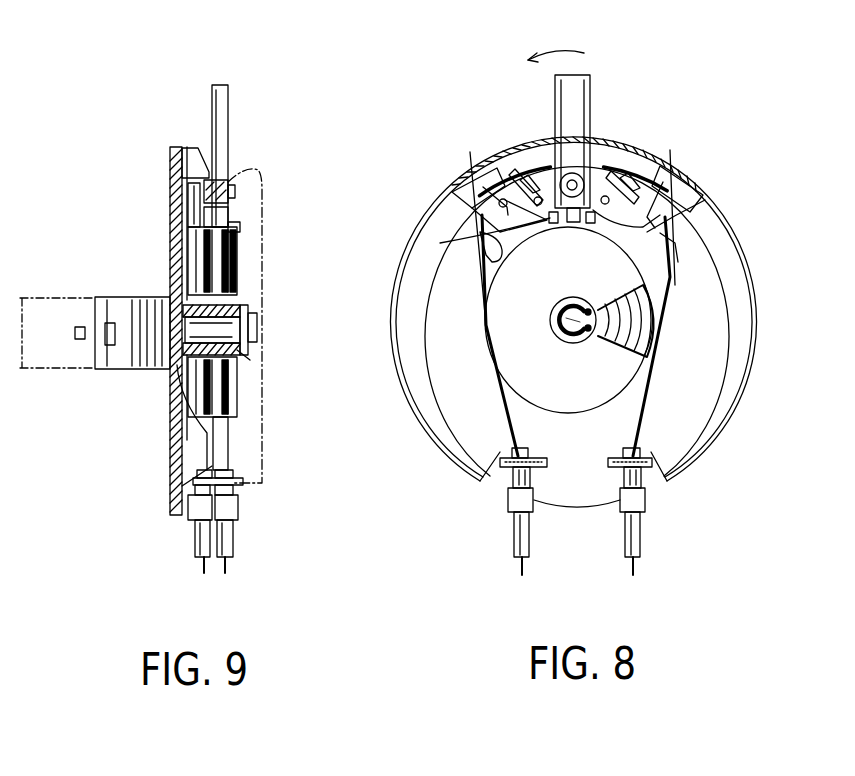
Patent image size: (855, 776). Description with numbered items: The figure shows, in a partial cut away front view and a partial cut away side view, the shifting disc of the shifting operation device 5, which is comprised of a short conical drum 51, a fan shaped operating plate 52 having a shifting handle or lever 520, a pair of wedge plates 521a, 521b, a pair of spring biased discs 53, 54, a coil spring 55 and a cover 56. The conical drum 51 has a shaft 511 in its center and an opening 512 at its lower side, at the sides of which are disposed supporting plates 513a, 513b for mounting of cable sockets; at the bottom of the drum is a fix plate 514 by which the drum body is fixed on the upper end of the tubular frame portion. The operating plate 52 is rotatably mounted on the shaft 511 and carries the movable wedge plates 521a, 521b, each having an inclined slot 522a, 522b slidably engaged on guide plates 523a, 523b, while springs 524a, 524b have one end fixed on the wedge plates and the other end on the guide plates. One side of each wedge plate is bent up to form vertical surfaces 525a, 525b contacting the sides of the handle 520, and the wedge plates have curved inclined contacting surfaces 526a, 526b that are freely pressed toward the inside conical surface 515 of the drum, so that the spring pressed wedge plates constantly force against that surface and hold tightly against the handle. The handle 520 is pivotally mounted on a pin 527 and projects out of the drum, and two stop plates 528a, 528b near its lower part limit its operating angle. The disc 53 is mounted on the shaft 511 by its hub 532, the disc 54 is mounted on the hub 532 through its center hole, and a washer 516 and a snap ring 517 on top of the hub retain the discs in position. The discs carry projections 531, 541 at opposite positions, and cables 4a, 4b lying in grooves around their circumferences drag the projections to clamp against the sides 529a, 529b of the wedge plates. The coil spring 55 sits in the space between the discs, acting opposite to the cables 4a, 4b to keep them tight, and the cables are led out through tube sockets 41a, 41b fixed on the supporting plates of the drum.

In FIG. 8, the cable 4a is at (636, 572).
In FIG. 9, the cable 4a is at (203, 566).
In FIG. 8, the cable 4b is at (520, 570).
In FIG. 9, the cable 4b is at (228, 567).
In FIG. 8, the shifting operation device 5 is at (684, 88).
In FIG. 9, the shifting operation device 5 is at (194, 68).
In FIG. 8, the tube socket 41a is at (640, 528).
In FIG. 9, the tube socket 41a is at (200, 540).
In FIG. 8, the tube socket 41b is at (519, 538).
In FIG. 9, the tube socket 41b is at (230, 539).
In FIG. 8, the conical drum 51 is at (750, 242).
In FIG. 9, the conical drum 51 is at (170, 160).
In FIG. 8, the operating plate 52 is at (680, 262).
In FIG. 9, the operating plate 52 is at (182, 216).
In FIG. 8, the spring biased disc 53 is at (662, 302).
In FIG. 9, the spring biased disc 53 is at (185, 266).
In FIG. 8, the spring biased disc 54 is at (535, 373).
In FIG. 9, the spring biased disc 54 is at (238, 252).
In FIG. 8, the coil spring 55 is at (655, 342).
In FIG. 9, the cover 56 is at (265, 445).
In FIG. 8, the shaft 511 is at (582, 306).
In FIG. 9, the shaft 511 is at (258, 328).
In FIG. 8, the opening 512 is at (570, 502).
In FIG. 8, the supporting plate 513a is at (655, 470).
In FIG. 8, the supporting plate 513b is at (507, 470).
In FIG. 9, the fix plate 514 is at (130, 357).
In FIG. 8, the inside conical surface 515 is at (420, 262).
In FIG. 8, the washer 516 is at (561, 313).
In FIG. 9, the washer 516 is at (248, 305).
In FIG. 8, the snap ring 517 is at (564, 328).
In FIG. 9, the snap ring 517 is at (252, 316).
In FIG. 8, the shifting handle 520 is at (586, 90).
In FIG. 9, the shifting handle 520 is at (222, 102).
In FIG. 8, the wedge plate 521a is at (500, 175).
In FIG. 9, the wedge plate 521a is at (182, 187).
In FIG. 8, the wedge plate 521b is at (665, 175).
In FIG. 8, the inclined slot 522a is at (512, 180).
In FIG. 8, the inclined slot 522b is at (660, 182).
In FIG. 8, the guide plate 523a is at (515, 185).
In FIG. 8, the guide plate 523b is at (645, 160).
In FIG. 8, the spring 524a is at (464, 224).
In FIG. 8, the spring 524b is at (690, 218).
In FIG. 8, the vertical surface 525a is at (540, 196).
In FIG. 8, the vertical surface 525b is at (608, 196).
In FIG. 8, the curved inclined contacting surface 526a is at (530, 185).
In FIG. 9, the curved inclined contacting surface 526a is at (195, 152).
In FIG. 8, the curved inclined contacting surface 526b is at (632, 175).
In FIG. 8, the pin 527 is at (565, 175).
In FIG. 9, the pin 527 is at (236, 190).
In FIG. 8, the stop plate 528a is at (555, 224).
In FIG. 8, the stop plate 528b is at (592, 224).
In FIG. 8, the side of wedge plate 529a is at (458, 200).
In FIG. 8, the side of wedge plate 529b is at (700, 195).
In FIG. 8, the projection 531 is at (500, 255).
In FIG. 9, the projection 531 is at (186, 244).
In FIG. 9, the hub 532 is at (242, 356).
In FIG. 8, the projection 541 is at (673, 246).
In FIG. 9, the projection 541 is at (242, 230).